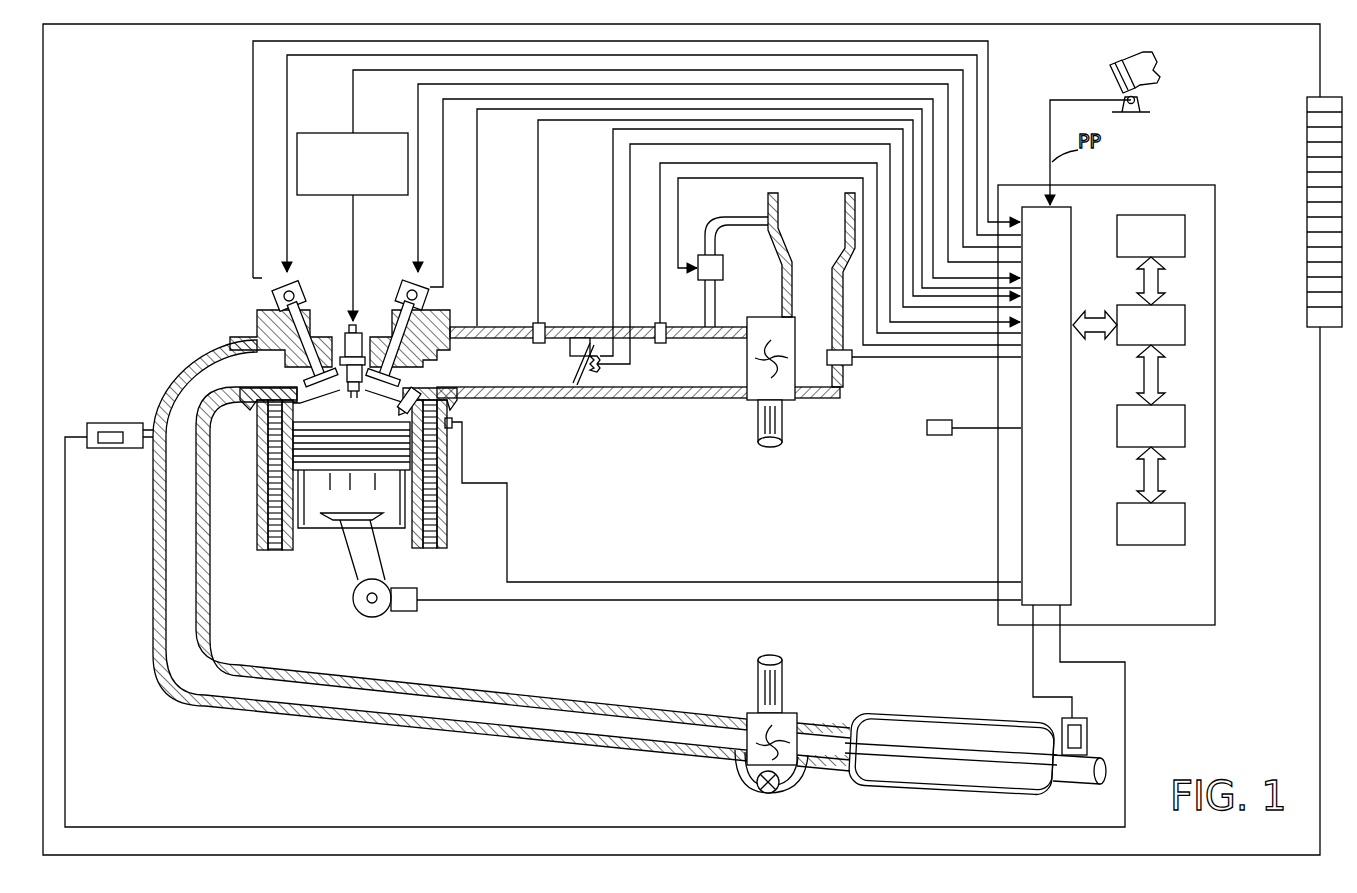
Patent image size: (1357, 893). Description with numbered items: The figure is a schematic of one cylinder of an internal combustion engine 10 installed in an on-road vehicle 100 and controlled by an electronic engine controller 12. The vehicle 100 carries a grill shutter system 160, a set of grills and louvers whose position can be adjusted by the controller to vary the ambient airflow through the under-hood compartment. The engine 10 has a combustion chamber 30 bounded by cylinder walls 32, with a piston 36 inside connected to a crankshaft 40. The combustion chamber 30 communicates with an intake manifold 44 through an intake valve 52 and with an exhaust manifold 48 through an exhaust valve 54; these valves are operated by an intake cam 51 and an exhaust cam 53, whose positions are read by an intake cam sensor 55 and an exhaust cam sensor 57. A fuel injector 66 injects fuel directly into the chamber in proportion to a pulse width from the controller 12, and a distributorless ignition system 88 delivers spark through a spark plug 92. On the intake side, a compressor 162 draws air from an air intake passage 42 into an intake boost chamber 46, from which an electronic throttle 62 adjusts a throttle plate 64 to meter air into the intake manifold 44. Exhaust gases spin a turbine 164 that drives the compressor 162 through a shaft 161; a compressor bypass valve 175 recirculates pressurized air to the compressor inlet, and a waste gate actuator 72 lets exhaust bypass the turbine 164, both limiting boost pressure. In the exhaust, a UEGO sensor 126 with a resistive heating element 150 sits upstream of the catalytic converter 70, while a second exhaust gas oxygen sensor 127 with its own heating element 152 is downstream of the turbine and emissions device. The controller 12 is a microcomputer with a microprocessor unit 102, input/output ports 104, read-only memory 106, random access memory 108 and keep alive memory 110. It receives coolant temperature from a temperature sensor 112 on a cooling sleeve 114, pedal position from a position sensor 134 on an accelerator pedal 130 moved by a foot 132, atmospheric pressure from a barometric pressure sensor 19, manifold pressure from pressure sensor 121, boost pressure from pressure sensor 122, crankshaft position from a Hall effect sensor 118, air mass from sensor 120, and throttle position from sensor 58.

The vehicle 100 is at (88, 30).
The internal combustion engine 10 is at (192, 262).
The electronic engine controller 12 is at (1162, 185).
The barometric pressure sensor 19 is at (940, 436).
The combustion chamber 30 is at (352, 403).
The cylinder walls 32 is at (296, 548).
The piston 36 is at (330, 540).
The crankshaft 40 is at (358, 614).
The air intake passage 42 is at (824, 244).
The intake manifold 44 is at (507, 376).
The intake boost chamber 46 is at (687, 376).
The exhaust manifold 48 is at (238, 380).
The intake cam 51 is at (408, 282).
The intake valve 52 is at (392, 381).
The exhaust cam 53 is at (300, 280).
The exhaust valve 54 is at (318, 383).
The intake cam sensor 55 is at (420, 298).
The exhaust cam sensor 57 is at (277, 292).
The throttle position sensor 58 is at (597, 327).
The electronic throttle 62 is at (577, 340).
The throttle plate 64 is at (585, 327).
The fuel injector 66 is at (427, 397).
The catalytic converter 70 is at (850, 777).
The waste gate actuator 72 is at (757, 788).
The distributorless ignition system 88 is at (310, 133).
The spark plug 92 is at (357, 323).
The microprocessor unit 102 is at (1185, 320).
The input/output ports 104 is at (1072, 216).
The read-only memory 106 is at (1185, 232).
The random access memory 108 is at (1185, 420).
The keep alive memory 110 is at (1185, 518).
The temperature sensor 112 is at (453, 428).
The cooling sleeve 114 is at (447, 513).
The Hall effect sensor 118 is at (398, 614).
The air mass sensor 120 is at (845, 366).
The pressure sensor 121 is at (538, 323).
The pressure sensor 122 is at (678, 313).
The UEGO sensor 126 is at (110, 423).
The second exhaust gas oxygen sensor 127 is at (1050, 727).
The accelerator pedal 130 is at (1115, 77).
The foot 132 is at (1157, 63).
The position sensor 134 is at (1138, 103).
The resistive heating element 150 is at (113, 447).
The resistive heating element 152 is at (1085, 735).
The grill shutter system 160 is at (1307, 150).
The shaft 161 is at (760, 408).
The compressor 162 is at (777, 317).
The turbine 164 is at (752, 713).
The compressor bypass valve 175 is at (723, 268).